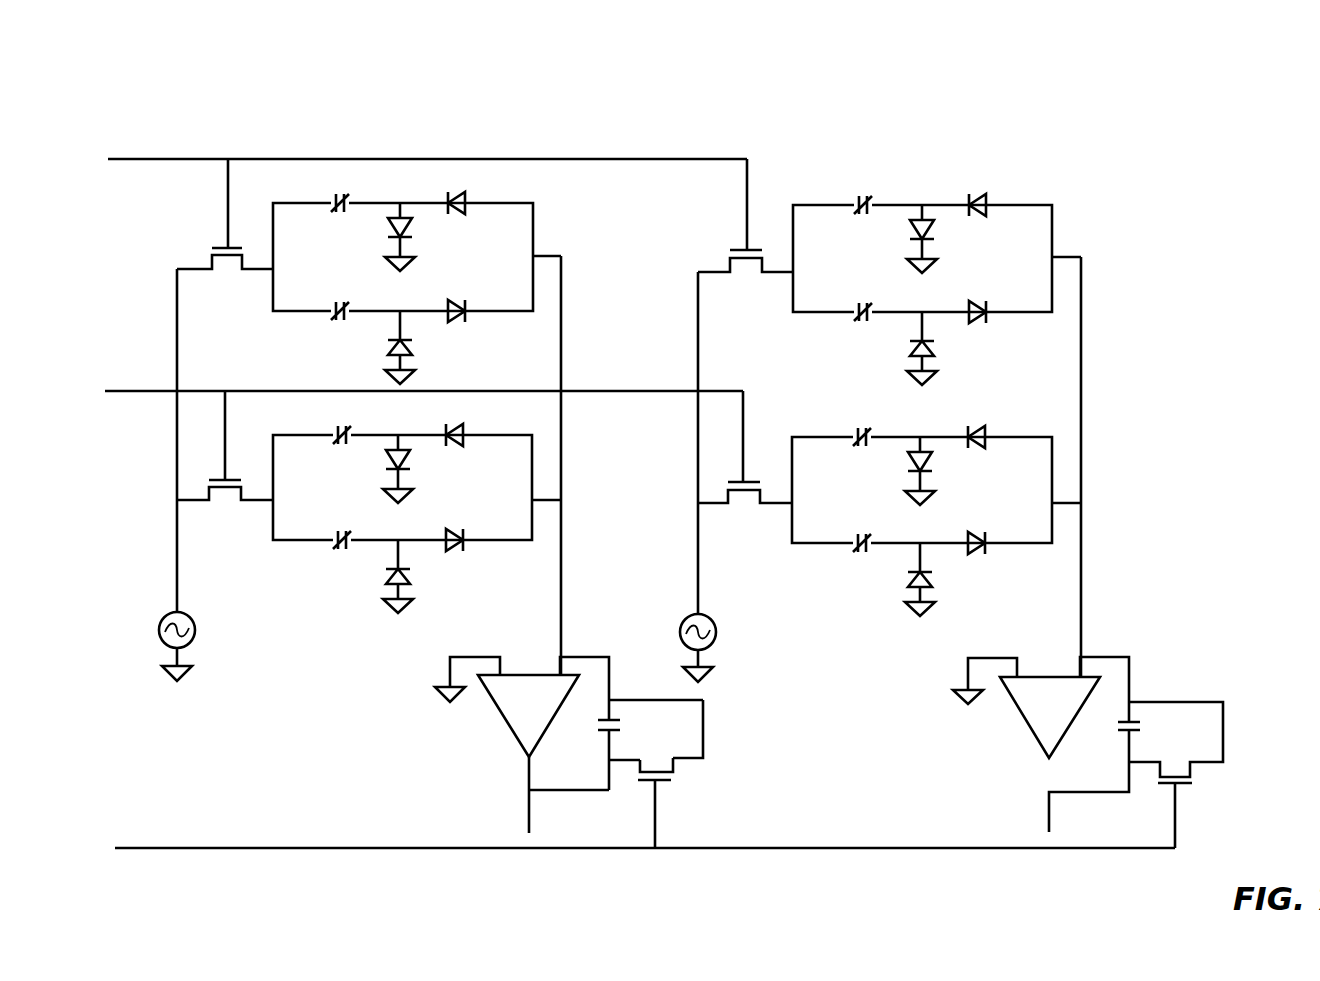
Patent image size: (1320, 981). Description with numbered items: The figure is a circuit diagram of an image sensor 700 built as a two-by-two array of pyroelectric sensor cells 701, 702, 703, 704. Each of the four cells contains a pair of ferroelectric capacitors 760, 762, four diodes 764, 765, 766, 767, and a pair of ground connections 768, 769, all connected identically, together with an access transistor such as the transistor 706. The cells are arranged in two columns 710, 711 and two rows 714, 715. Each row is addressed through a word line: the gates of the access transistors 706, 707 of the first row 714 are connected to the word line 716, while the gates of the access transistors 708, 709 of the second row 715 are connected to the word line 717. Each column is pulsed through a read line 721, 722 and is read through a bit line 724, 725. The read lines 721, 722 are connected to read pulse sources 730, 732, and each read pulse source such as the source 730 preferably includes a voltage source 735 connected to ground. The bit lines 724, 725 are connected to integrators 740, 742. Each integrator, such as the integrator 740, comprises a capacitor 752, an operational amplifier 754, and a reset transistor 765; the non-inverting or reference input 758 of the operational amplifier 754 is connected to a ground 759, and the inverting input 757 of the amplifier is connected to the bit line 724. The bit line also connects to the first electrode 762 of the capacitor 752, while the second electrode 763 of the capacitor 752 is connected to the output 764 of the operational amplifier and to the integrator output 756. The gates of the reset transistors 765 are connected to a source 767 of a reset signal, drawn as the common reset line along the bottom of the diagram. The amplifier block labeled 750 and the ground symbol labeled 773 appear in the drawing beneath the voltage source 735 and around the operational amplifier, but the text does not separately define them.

The image sensor 700 is at (1150, 72).
The sensor cell 701 is at (556, 189).
The sensor cell 702 is at (1085, 190).
The sensor cell 703 is at (288, 648).
The sensor cell 704 is at (1027, 408).
The access transistor 706 is at (209, 258).
The access transistor 707 is at (730, 262).
The access transistor 708 is at (240, 495).
The access transistor 709 is at (760, 493).
The column 710 is at (407, 125).
The column 711 is at (922, 146).
The row 714 is at (1148, 234).
The row 715 is at (1152, 468).
The word line 716 is at (155, 157).
The word line 717 is at (138, 388).
The read line 721 is at (176, 466).
The read line 722 is at (696, 447).
The bit line 724 is at (562, 545).
The bit line 725 is at (1084, 532).
The read pulse source 730 is at (105, 664).
The read pulse source 732 is at (748, 626).
The voltage source 735 is at (161, 624).
The integrator 740 is at (748, 700).
The integrator 742 is at (988, 752).
The charge amplifier circuit 750 is at (532, 720).
The capacitor 752 is at (621, 735).
The operational amplifier 754 is at (506, 720).
The output 756 is at (526, 810).
The inverting input 757 is at (557, 668).
The non-inverting input 758 is at (450, 656).
The ground 759 is at (448, 703).
The ferroelectric capacitor 760 is at (340, 198).
The ferroelectric capacitor 762 is at (333, 313).
The second electrode 763 is at (605, 736).
The diode 764 is at (412, 213).
The diode 765 is at (466, 207).
The diode 766 is at (462, 317).
The diode 767 is at (258, 851).
The ground connection 768 is at (392, 256).
The ground connection 769 is at (388, 371).
The ground connection 773 is at (172, 683).